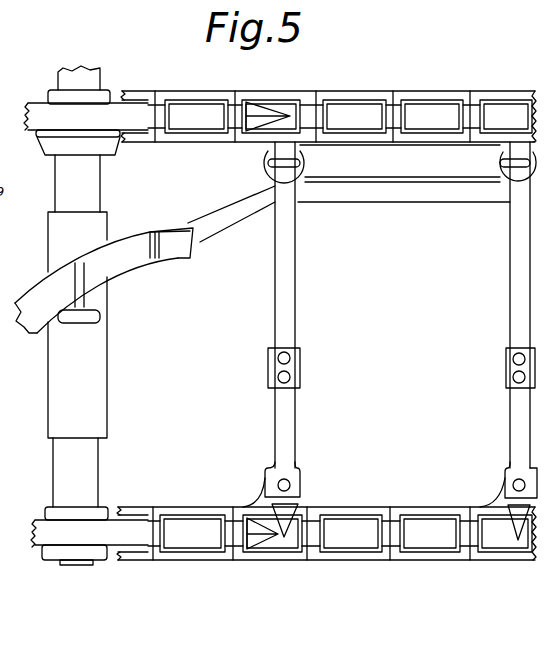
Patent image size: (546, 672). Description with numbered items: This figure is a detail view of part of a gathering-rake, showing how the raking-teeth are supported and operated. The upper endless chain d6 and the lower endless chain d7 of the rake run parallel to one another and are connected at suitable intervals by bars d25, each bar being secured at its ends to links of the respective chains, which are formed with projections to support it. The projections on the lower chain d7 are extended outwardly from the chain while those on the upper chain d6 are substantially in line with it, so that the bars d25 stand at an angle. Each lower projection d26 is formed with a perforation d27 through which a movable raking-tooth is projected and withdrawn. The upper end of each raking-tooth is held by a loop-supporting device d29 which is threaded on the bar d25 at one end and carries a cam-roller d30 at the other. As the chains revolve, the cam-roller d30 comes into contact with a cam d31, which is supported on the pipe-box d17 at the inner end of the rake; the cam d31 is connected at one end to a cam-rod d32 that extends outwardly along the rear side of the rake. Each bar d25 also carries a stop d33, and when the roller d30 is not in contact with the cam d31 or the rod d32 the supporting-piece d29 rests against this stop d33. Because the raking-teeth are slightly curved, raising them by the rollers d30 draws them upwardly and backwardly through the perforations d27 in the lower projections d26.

The upper endless chain d6 is at (375, 98).
The lower endless chain d7 is at (405, 515).
The pipe-box d17 is at (88, 373).
The bar d25 is at (282, 300).
The lower projection d26 is at (300, 470).
The perforation d27 is at (292, 506).
The loop-supporting device d29 is at (305, 163).
The cam-roller d30 is at (268, 172).
The cam d31 is at (85, 277).
The cam-rod d32 is at (362, 190).
The stop d33 is at (300, 363).